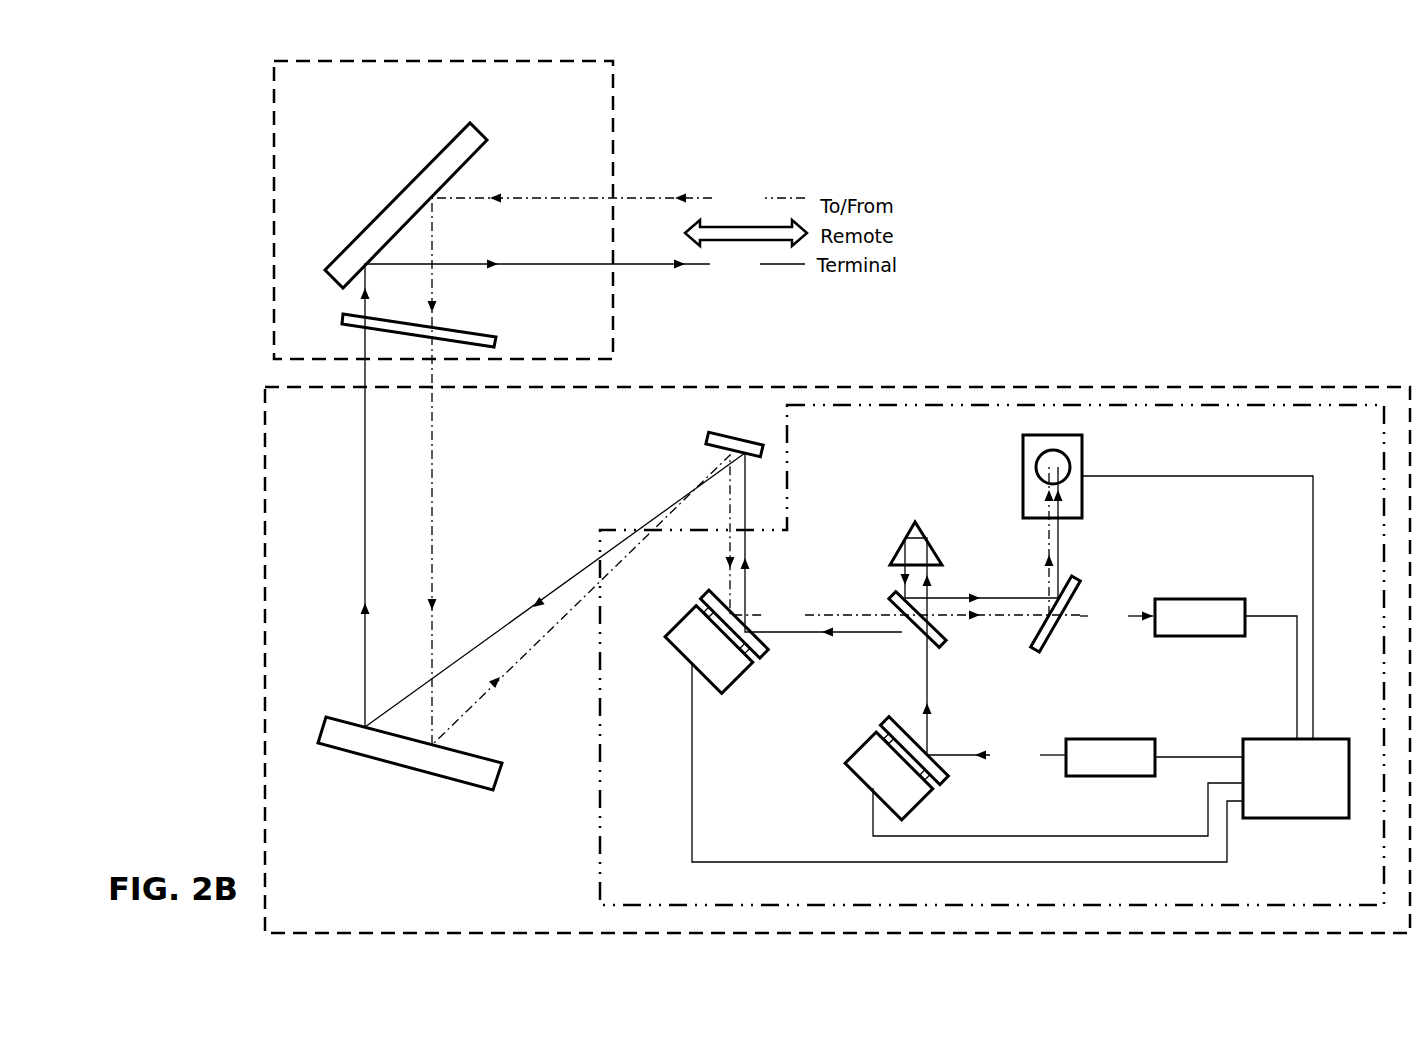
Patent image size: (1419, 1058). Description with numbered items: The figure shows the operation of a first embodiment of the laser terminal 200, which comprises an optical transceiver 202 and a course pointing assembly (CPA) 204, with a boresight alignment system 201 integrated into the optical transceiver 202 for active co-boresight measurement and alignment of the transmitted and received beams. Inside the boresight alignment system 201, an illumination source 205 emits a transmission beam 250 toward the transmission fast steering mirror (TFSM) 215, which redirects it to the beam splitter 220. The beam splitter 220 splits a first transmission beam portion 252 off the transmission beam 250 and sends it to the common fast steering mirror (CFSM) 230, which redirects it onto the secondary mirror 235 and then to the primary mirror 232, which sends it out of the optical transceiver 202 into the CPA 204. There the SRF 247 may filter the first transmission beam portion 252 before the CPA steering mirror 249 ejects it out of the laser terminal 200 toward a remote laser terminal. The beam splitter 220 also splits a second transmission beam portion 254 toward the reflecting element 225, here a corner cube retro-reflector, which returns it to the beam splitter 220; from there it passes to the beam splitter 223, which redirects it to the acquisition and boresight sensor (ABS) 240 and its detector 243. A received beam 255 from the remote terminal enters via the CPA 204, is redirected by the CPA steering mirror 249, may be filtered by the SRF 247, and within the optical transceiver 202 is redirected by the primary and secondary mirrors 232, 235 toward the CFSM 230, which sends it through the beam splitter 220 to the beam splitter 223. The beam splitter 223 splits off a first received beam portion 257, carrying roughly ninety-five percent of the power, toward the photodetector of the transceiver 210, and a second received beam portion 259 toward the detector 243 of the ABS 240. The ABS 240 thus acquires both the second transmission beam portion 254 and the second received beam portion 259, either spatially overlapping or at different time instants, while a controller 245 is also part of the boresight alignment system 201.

The laser terminal 200 is at (152, 63).
The boresight alignment system 201 is at (1272, 405).
The optical transceiver 202 is at (263, 693).
The course pointing assembly (CPA) 204 is at (613, 93).
The illumination source 205 is at (1157, 738).
The transceiver 210 is at (1212, 599).
The transmission fast steering mirror (TFSM) 215 is at (857, 775).
The beam splitter 220 is at (893, 592).
The beam splitter 223 is at (1078, 578).
The reflecting element 225 is at (919, 519).
The common fast steering mirror (CFSM) 230 is at (680, 653).
The primary mirror 232 is at (440, 777).
The secondary mirror 235 is at (707, 437).
The acquisition and boresight sensor (ABS) 240 is at (1060, 433).
The detector 243 is at (1038, 453).
The controller 245 is at (1296, 778).
The SRF 247 is at (343, 319).
The CPA steering mirror 249 is at (420, 173).
The transmission beam 250 is at (996, 755).
The first transmission beam portion 252 is at (632, 490).
The second transmission beam portion 254 is at (932, 585).
The received beam 255 is at (754, 467).
The first received beam portion 257 is at (1116, 616).
The second received beam portion 259 is at (1048, 537).